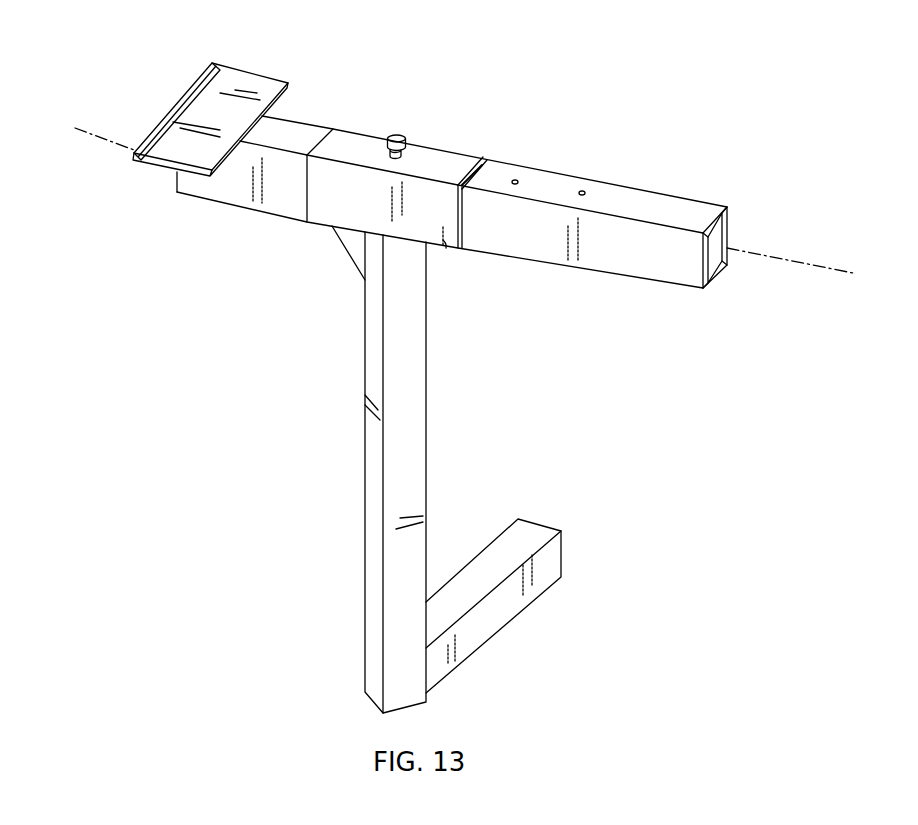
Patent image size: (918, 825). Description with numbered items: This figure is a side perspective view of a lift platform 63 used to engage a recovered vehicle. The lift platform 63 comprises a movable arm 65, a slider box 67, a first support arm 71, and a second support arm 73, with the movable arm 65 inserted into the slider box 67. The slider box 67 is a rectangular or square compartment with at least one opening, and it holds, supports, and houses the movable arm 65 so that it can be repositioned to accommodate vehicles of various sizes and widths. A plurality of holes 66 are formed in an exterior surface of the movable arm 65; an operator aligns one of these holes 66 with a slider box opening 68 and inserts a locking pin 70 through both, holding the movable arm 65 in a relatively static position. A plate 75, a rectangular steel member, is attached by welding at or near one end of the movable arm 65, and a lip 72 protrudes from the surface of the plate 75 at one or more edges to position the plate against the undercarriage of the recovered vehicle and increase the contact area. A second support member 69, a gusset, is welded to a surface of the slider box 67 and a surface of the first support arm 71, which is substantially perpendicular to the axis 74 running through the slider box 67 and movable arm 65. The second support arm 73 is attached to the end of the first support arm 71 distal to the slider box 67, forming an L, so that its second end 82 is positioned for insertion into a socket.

The lift platform 63 is at (252, 478).
The movable arm 65 is at (650, 255).
The holes 66 is at (515, 180).
The slider box 67 is at (443, 247).
The slider box opening 68 is at (403, 153).
The second support member 69 is at (353, 243).
The locking pin 70 is at (397, 133).
The first support arm 71 is at (375, 535).
The lip 72 is at (220, 68).
The second support arm 73 is at (500, 610).
The axis 74 is at (75, 128).
The plate 75 is at (198, 110).
The second end 82 is at (573, 543).